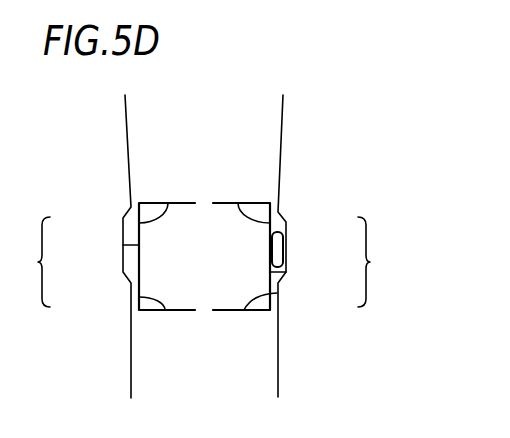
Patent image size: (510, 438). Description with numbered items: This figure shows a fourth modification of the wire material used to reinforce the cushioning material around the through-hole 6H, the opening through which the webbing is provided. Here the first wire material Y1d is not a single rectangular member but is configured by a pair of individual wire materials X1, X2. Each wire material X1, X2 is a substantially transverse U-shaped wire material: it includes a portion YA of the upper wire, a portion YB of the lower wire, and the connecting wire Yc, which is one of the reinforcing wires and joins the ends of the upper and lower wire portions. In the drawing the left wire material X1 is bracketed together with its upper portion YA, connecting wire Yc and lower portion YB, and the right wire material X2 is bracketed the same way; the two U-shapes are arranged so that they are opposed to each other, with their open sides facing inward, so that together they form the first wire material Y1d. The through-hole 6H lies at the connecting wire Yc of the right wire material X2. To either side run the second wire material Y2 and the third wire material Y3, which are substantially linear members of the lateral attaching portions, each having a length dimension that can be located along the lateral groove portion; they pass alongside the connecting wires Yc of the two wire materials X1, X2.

The first wire material Y1d is at (166, 318).
The second wire material Y2 is at (125, 150).
The third wire material Y3 is at (283, 150).
The portion of the upper wire YA is at (139, 225).
The connecting wire Yc is at (139, 245).
The portion of the lower wire YB is at (139, 292).
The through-hole 6H is at (272, 248).
The wire material X1 is at (29, 262).
The wire material X2 is at (376, 262).